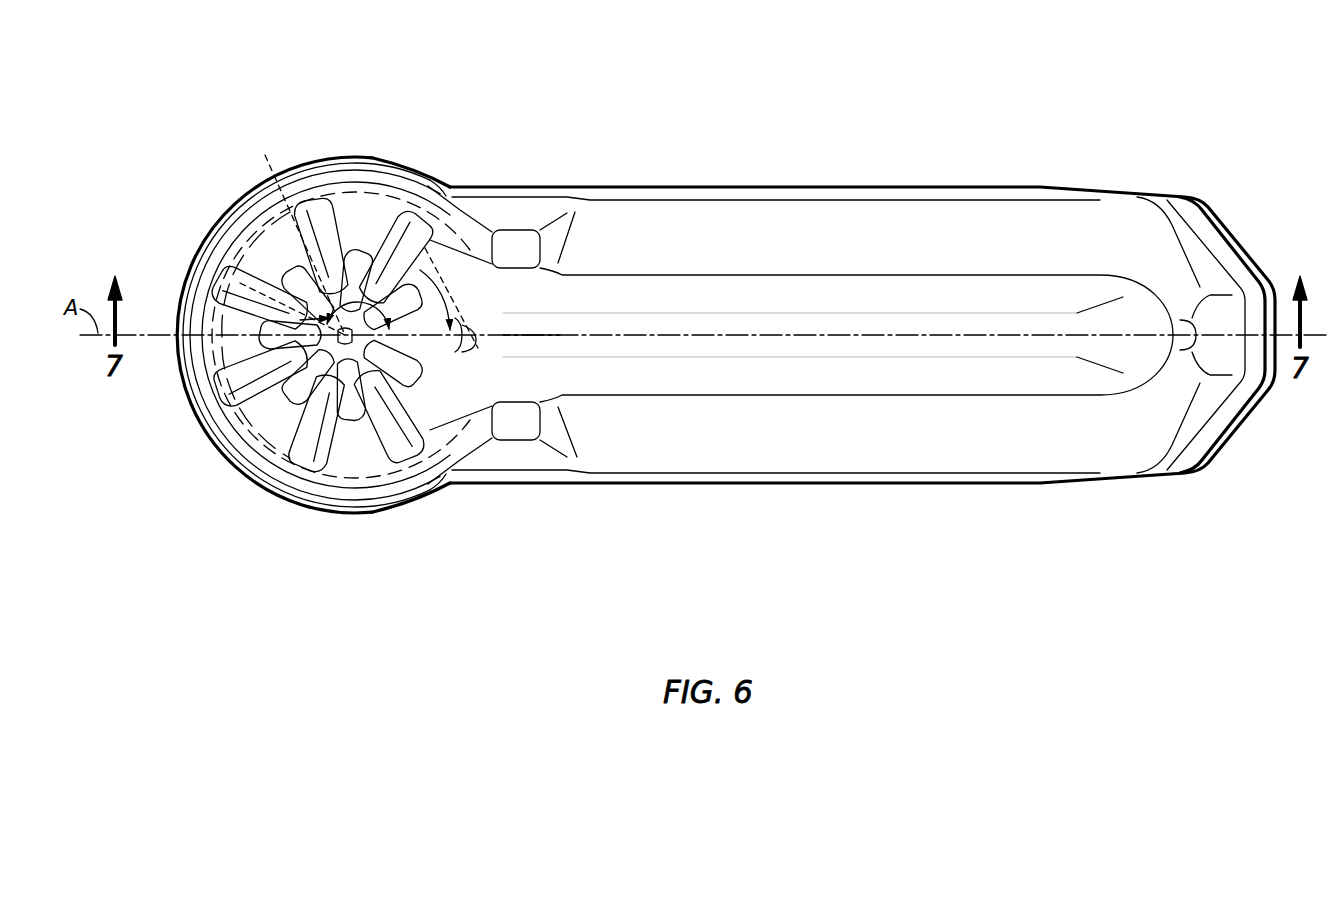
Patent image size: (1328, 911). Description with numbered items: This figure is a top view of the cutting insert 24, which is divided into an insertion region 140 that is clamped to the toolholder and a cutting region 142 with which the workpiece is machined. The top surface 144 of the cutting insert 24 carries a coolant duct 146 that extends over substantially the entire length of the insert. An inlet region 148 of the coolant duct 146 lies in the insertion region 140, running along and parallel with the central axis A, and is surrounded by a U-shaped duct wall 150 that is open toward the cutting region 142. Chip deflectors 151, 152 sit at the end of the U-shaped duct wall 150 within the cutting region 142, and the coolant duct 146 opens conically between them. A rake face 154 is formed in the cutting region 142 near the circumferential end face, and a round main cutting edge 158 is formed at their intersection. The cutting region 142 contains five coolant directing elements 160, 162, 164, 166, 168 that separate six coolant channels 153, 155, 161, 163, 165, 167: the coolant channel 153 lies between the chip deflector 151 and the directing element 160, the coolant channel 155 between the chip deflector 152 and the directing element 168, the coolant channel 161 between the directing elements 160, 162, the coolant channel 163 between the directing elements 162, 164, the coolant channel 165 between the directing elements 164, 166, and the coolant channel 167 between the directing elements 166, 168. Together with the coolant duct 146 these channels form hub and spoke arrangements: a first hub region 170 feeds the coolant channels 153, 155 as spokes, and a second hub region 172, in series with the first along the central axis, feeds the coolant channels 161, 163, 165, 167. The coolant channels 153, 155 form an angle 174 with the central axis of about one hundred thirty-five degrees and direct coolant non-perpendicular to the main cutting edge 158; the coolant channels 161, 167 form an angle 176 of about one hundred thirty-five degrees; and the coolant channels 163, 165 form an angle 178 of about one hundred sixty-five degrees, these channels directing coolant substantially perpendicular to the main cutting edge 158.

The cutting insert 24 is at (176, 79).
The insertion region 140 is at (970, 170).
The cutting region 142 is at (434, 140).
The top surface 144 is at (753, 229).
The coolant duct 146 is at (618, 324).
The inlet region 148 is at (1133, 320).
The U-shaped duct wall 150 is at (815, 290).
The chip deflector 151 is at (513, 243).
The chip deflector 152 is at (512, 423).
The coolant channel 153 is at (408, 235).
The rake face 154 is at (226, 248).
The coolant channel 155 is at (403, 457).
The main cutting edge 158 is at (187, 300).
The coolant directing element 160 is at (383, 245).
The coolant channel 161 is at (298, 196).
The coolant directing element 162 is at (238, 228).
The coolant channel 163 is at (218, 278).
The coolant directing element 164 is at (235, 356).
The coolant channel 165 is at (240, 383).
The coolant directing element 166 is at (262, 420).
The coolant channel 167 is at (308, 460).
The coolant directing element 168 is at (383, 392).
The first hub region 170 is at (475, 347).
The second hub region 172 is at (362, 348).
The angle 174 is at (530, 328).
The angle 176 is at (457, 288).
The angle 178 is at (355, 300).